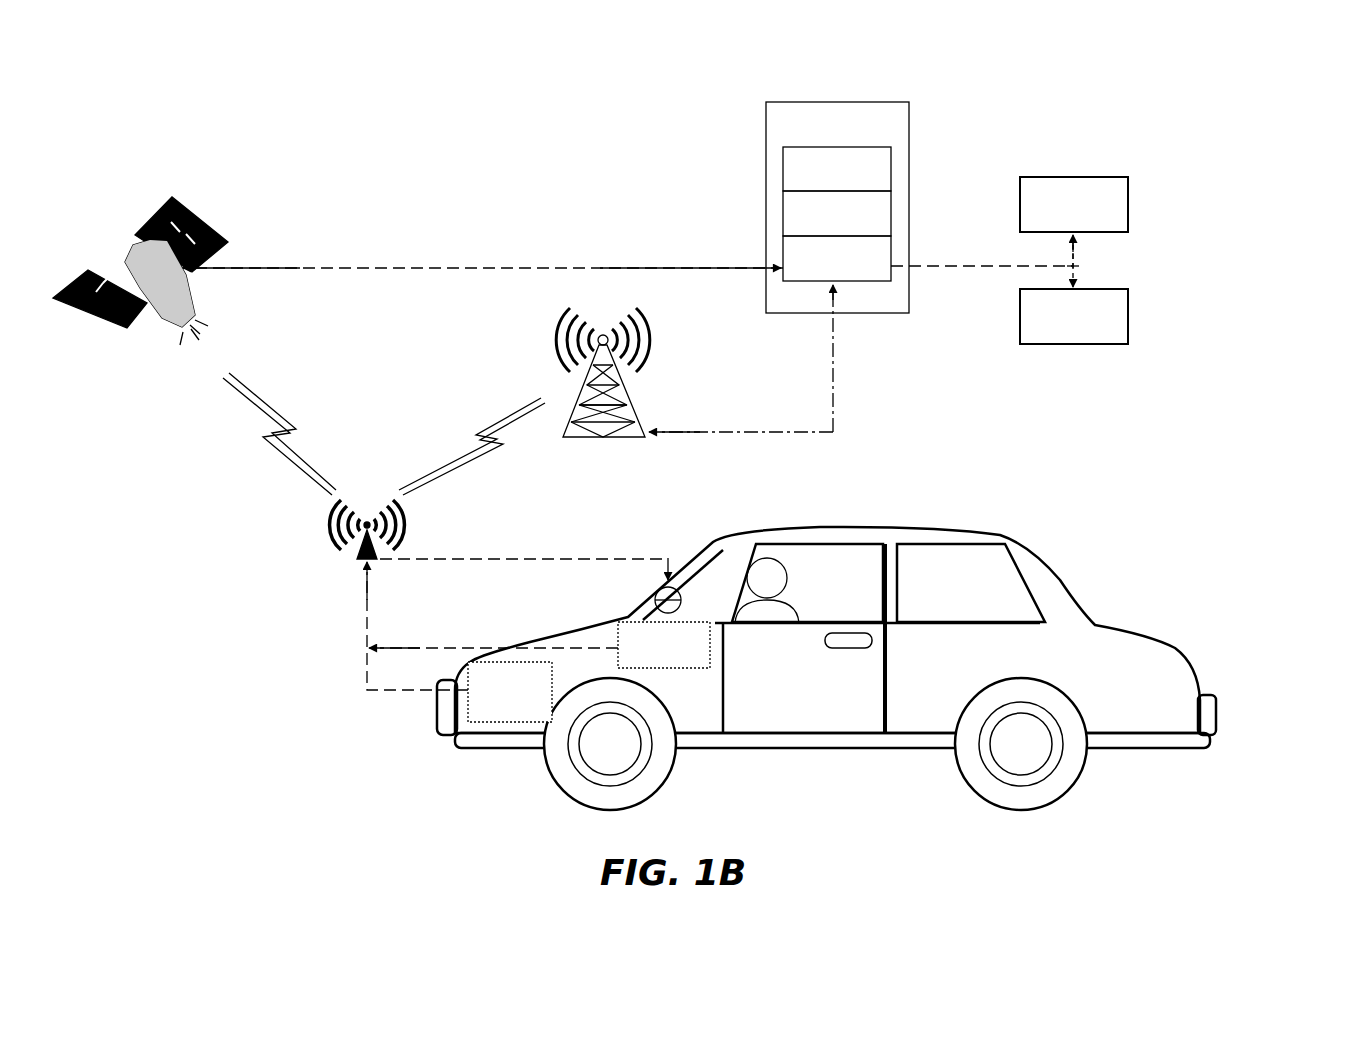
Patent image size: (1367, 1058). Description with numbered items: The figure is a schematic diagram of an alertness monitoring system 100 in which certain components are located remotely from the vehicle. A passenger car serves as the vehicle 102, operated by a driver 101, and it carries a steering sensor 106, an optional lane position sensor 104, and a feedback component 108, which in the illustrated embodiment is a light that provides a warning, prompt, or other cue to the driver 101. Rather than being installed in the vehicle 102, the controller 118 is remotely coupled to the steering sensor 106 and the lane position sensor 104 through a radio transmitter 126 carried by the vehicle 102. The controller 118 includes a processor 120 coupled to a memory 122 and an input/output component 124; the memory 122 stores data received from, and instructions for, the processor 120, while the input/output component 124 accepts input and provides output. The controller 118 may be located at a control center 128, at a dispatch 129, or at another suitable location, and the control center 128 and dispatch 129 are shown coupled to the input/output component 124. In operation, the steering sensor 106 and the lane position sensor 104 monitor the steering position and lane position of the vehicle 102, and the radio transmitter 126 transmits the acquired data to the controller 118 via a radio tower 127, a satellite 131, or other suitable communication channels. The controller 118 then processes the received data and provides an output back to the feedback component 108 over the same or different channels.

The alertness monitoring system 100 is at (1222, 160).
The driver 101 is at (800, 612).
The vehicle 102 is at (1178, 648).
The lane position sensor 104 is at (452, 715).
The steering sensor 106 is at (617, 640).
The feedback component 108 is at (655, 603).
The controller 118 is at (909, 122).
The processor 120 is at (783, 168).
The memory 122 is at (783, 213).
The input/output component 124 is at (783, 258).
The radio transmitter 126 is at (355, 560).
The radio tower 127 is at (552, 338).
The control center 128 is at (1128, 198).
The dispatch 129 is at (1128, 319).
The satellite 131 is at (122, 245).